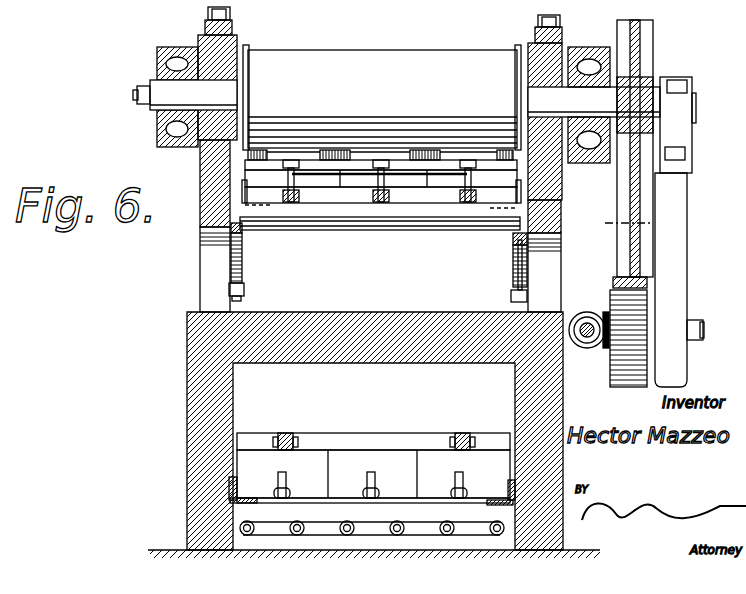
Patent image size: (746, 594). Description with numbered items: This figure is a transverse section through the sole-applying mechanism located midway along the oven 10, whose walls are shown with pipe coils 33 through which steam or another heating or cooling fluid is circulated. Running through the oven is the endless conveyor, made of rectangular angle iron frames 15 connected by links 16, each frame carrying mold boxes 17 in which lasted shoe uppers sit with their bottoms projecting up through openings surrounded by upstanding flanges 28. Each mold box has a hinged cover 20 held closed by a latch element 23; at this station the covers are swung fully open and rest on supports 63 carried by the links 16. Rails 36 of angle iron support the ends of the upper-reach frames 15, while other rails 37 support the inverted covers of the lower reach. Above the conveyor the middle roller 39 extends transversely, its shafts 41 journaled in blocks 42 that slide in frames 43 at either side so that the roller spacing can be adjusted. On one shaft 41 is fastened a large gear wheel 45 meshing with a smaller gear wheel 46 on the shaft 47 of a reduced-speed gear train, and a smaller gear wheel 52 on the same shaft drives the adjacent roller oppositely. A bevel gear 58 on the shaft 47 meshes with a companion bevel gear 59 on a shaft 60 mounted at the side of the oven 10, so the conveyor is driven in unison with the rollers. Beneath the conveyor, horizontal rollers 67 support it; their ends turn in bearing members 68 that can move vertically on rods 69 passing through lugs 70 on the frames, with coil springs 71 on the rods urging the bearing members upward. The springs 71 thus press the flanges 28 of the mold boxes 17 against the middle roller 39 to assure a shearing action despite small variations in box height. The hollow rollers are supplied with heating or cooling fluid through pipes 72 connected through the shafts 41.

The oven 10 is at (197, 368).
The angle iron frames 15 is at (321, 195).
The links 16 is at (470, 200).
The mold boxes 17 is at (288, 486).
The cover 20 is at (326, 503).
The latch element 23 is at (375, 487).
The flange 28 is at (405, 150).
The pipe coils 33 is at (416, 522).
The rails 36 is at (241, 185).
The rails 37 is at (228, 492).
The middle roller 39 is at (372, 56).
The shafts 41 is at (166, 86).
The blocks 42 is at (232, 63).
The frames 43 is at (203, 228).
The large gear wheel 45 is at (646, 38).
The smaller gear wheel 46 is at (615, 385).
The shaft 47 is at (694, 322).
The smaller gear wheel 52 is at (585, 60).
The bevel gear 58 is at (604, 312).
The bevel gear 59 is at (586, 343).
The shaft 60 is at (585, 322).
The supports 63 is at (397, 178).
The rollers 67 is at (395, 232).
The bearing members 68 is at (246, 234).
The rods 69 is at (243, 268).
The lugs 70 is at (245, 290).
The springs 71 is at (532, 268).
The pipes 72 is at (134, 97).